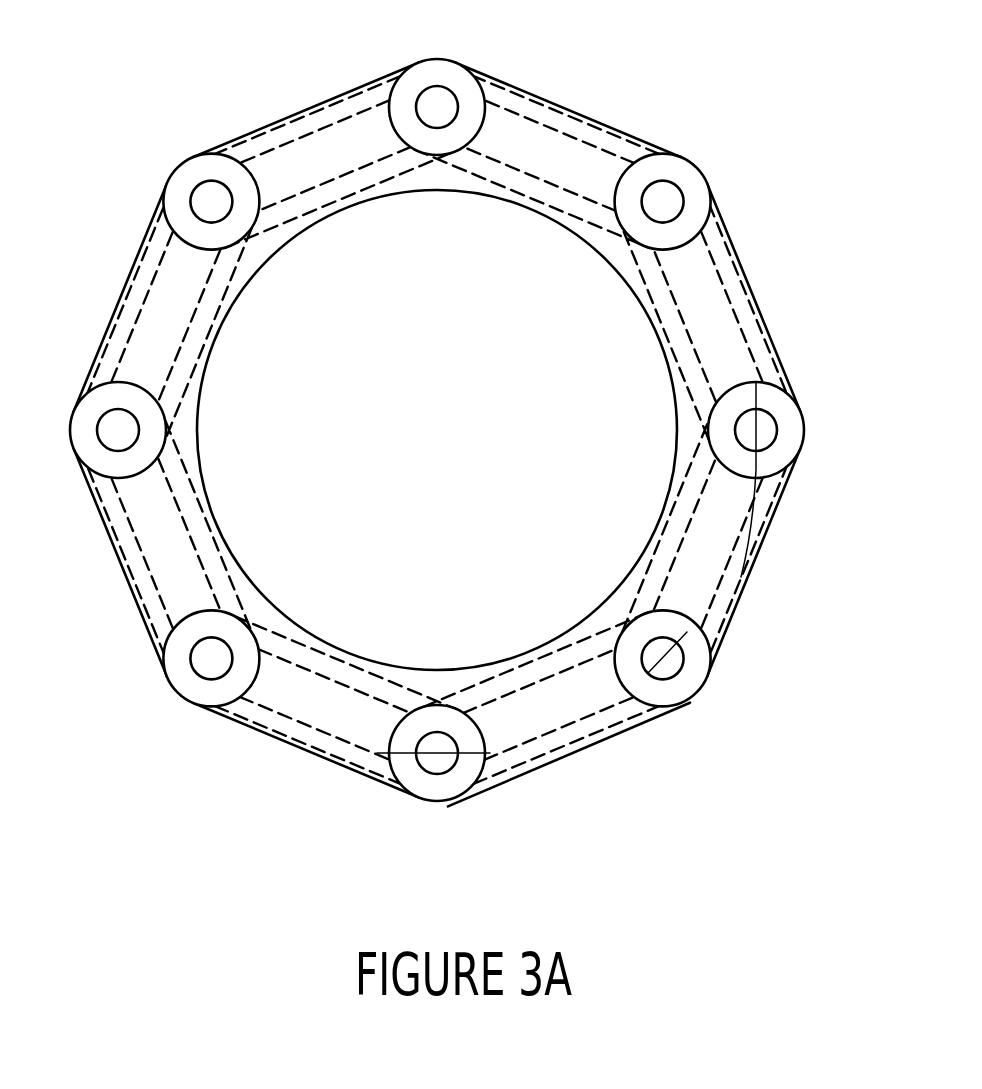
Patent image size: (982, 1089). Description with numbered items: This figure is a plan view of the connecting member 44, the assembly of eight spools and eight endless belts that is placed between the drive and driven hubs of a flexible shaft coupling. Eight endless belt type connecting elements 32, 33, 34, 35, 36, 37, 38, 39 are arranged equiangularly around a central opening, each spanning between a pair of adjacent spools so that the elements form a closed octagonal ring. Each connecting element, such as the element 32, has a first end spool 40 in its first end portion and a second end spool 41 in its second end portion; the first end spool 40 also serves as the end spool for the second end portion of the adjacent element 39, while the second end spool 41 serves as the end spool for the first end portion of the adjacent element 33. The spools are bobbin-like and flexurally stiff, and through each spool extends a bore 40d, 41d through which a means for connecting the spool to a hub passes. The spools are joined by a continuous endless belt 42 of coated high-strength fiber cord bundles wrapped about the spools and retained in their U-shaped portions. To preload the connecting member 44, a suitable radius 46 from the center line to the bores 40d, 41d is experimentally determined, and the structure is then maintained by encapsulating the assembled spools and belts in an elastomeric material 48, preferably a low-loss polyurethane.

The connecting element 32 is at (745, 578).
The connecting element 33 is at (540, 752).
The connecting element 34 is at (307, 745).
The connecting element 35 is at (137, 563).
The connecting element 36 is at (128, 298).
The connecting element 37 is at (285, 130).
The connecting element 38 is at (532, 110).
The connecting element 39 is at (738, 290).
The first end spool 40 is at (806, 430).
The bore 40d is at (762, 434).
The second end spool 41 is at (700, 660).
The bore 41d is at (666, 663).
The endless belt 42 is at (622, 138).
The connecting member 44 is at (465, 430).
The radius 46 is at (578, 717).
The elastomeric material 48 is at (510, 777).